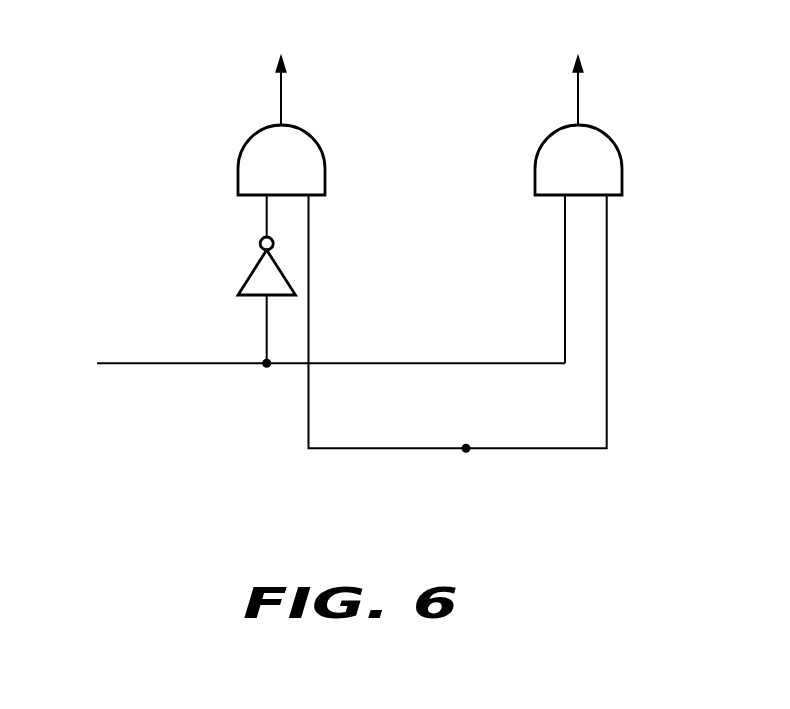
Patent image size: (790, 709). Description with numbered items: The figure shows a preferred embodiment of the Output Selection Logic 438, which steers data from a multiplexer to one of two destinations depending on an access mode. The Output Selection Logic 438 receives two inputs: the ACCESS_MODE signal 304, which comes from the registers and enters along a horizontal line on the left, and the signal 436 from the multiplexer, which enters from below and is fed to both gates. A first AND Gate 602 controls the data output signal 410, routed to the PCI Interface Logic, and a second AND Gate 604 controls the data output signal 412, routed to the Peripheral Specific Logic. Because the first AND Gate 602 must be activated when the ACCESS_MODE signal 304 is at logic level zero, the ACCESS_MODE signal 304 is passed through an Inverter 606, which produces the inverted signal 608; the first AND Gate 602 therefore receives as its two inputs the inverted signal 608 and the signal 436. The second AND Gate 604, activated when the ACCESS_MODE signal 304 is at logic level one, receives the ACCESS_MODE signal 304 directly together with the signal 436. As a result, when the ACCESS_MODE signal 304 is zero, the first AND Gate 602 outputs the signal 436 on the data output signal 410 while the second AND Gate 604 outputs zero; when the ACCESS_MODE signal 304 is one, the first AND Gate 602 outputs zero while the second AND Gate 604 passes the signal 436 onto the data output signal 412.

The data output signal 410 is at (280, 78).
The data output signal 412 is at (578, 78).
The first AND gate 602 is at (305, 128).
The second AND gate 604 is at (605, 130).
The inverter 606 is at (252, 270).
The inverted signal 608 is at (266, 212).
The ACCESS_MODE signal 304 is at (306, 287).
The signal from the multiplexer 436 is at (466, 453).
The output selection logic 438 is at (260, 548).